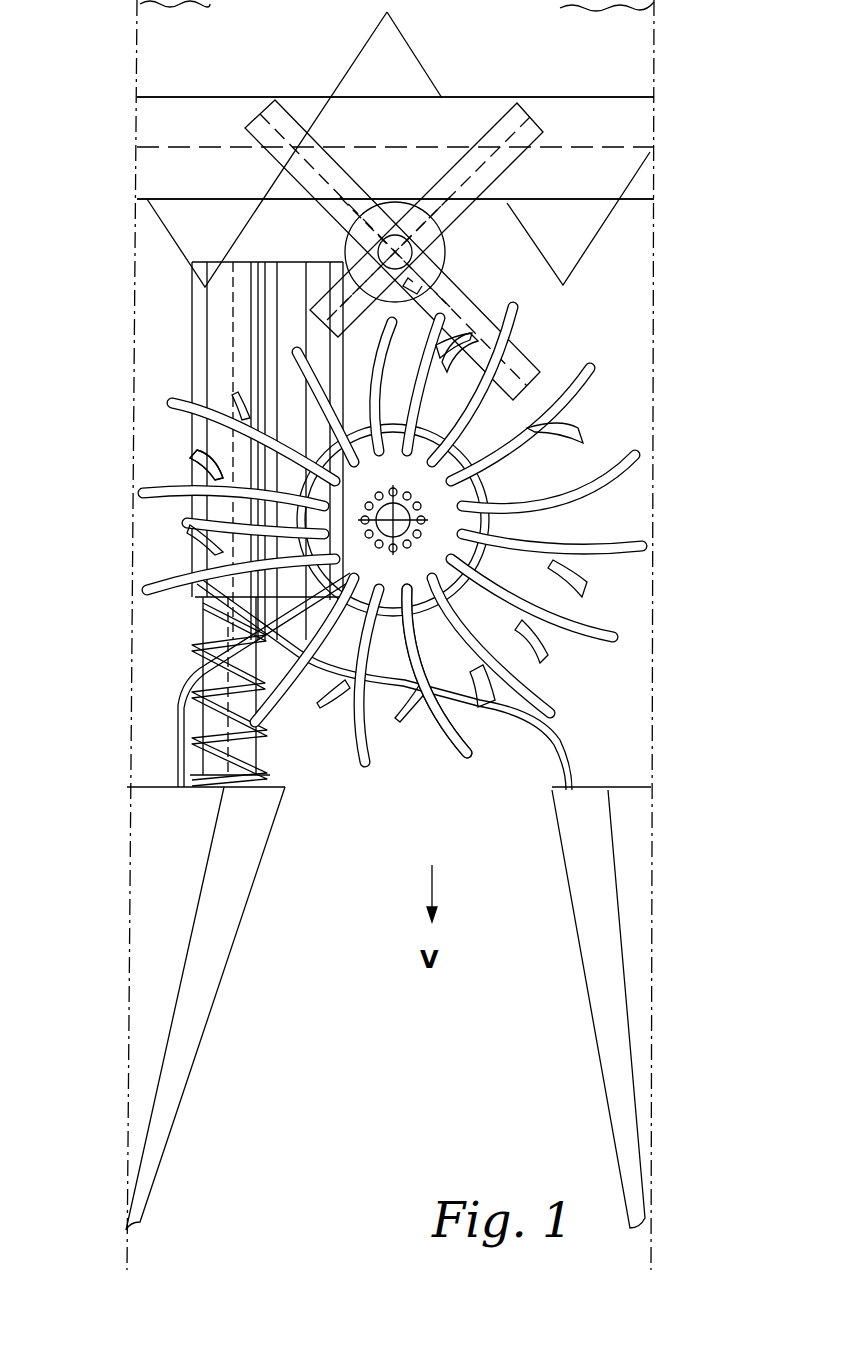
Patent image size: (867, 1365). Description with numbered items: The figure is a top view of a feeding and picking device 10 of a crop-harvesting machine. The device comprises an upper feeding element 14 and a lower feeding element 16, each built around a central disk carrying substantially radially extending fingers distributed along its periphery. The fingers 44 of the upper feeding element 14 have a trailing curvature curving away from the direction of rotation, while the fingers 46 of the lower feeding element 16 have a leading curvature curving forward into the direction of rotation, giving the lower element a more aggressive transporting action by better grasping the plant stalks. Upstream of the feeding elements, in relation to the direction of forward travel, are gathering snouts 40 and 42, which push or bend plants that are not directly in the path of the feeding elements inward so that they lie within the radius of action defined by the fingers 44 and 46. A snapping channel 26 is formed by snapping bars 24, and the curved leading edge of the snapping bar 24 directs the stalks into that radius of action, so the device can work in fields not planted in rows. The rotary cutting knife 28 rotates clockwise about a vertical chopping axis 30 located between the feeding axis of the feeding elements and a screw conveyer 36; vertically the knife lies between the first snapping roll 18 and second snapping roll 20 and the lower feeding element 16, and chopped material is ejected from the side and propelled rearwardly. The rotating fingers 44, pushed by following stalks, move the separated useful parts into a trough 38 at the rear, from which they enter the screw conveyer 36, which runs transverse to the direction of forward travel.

The feeding and picking device 10 is at (403, 782).
The upper feeding element 14 is at (181, 398).
The lower feeding element 16 is at (197, 453).
The first snapping roll 18 is at (237, 737).
The second snapping roll 20 is at (302, 278).
The snapping bar 24 is at (603, 753).
The snapping channel 26 is at (267, 517).
The rotary cutting knife 28 is at (528, 133).
The vertical chopping axis 30 is at (395, 252).
The screw conveyer 36 is at (155, 178).
The trough 38 is at (170, 68).
The gathering snout 40 is at (173, 1090).
The gathering snout 42 is at (607, 1090).
The fingers of the upper feeding element 44 is at (462, 750).
The fingers of the lower feeding element 46 is at (481, 700).